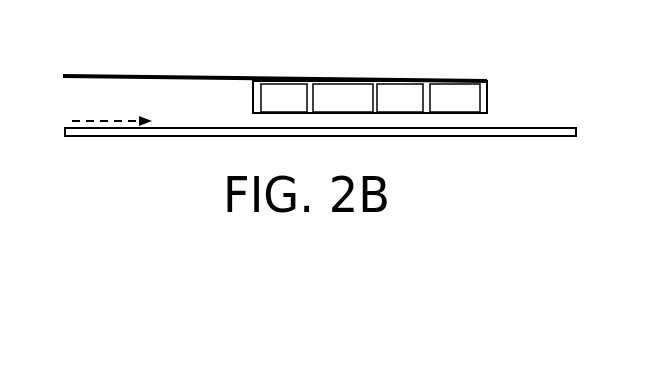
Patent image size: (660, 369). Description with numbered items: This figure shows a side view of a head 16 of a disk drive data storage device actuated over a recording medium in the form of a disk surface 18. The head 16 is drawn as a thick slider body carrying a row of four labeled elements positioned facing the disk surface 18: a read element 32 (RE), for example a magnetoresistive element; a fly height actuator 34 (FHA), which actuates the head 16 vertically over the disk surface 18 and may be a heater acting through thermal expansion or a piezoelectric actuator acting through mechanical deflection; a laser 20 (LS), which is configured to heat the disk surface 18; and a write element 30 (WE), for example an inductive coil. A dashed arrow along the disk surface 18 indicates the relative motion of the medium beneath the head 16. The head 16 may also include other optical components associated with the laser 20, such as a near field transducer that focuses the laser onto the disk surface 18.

The head 16 is at (503, 80).
The disk surface 18 is at (578, 122).
The laser 20 is at (396, 86).
The write element 30 is at (470, 85).
The read element 32 is at (283, 84).
The fly height actuator 34 is at (345, 88).